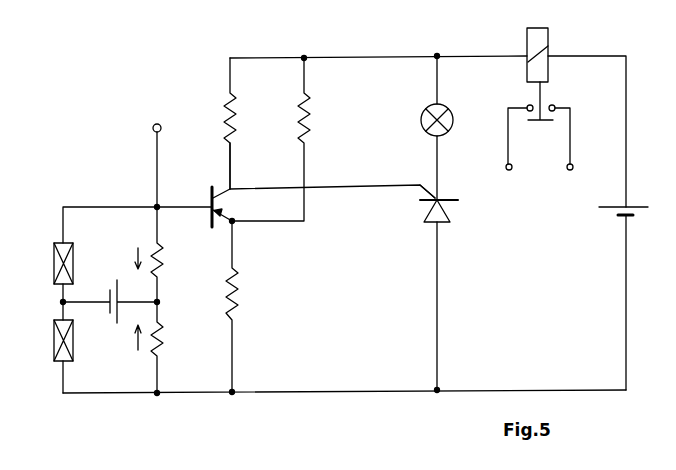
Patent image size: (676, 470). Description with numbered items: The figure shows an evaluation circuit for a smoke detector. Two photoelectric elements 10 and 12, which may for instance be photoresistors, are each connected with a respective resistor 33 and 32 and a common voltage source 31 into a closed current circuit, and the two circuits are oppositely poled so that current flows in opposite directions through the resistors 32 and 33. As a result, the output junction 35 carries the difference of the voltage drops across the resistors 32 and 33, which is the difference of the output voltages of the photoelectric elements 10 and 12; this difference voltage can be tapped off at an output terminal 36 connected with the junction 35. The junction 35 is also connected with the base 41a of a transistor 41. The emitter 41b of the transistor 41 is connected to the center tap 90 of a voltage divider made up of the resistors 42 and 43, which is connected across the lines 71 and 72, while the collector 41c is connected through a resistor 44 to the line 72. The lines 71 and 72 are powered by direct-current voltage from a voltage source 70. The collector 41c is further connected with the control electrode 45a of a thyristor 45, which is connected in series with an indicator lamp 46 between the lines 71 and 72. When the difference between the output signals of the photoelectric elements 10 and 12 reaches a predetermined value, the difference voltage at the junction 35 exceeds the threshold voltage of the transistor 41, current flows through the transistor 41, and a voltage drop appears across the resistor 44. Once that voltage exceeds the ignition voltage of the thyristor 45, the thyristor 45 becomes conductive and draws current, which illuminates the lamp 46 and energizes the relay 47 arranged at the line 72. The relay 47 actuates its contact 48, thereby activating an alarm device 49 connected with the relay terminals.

The photoelectric element 10 is at (49, 356).
The photoelectric element 12 is at (49, 281).
The common voltage source 31 is at (111, 308).
The resistor 32 is at (164, 254).
The resistor 33 is at (164, 347).
The output junction 35 is at (111, 215).
The output terminal 36 is at (154, 154).
The transistor 41 is at (199, 205).
The base 41a is at (210, 208).
The emitter 41b is at (226, 224).
The collector 41c is at (229, 187).
The resistor 42 is at (246, 307).
The resistor 43 is at (286, 139).
The resistor 44 is at (215, 123).
The thyristor 45 is at (446, 295).
The control electrode 45a is at (432, 186).
The indicator lamp 46 is at (428, 128).
The relay 47 is at (554, 55).
The relay contact 48 is at (541, 111).
The alarm device 49 is at (539, 146).
The voltage source 70 is at (618, 298).
The line 71 is at (344, 384).
The line 72 is at (428, 121).
The center tap 90 is at (235, 224).